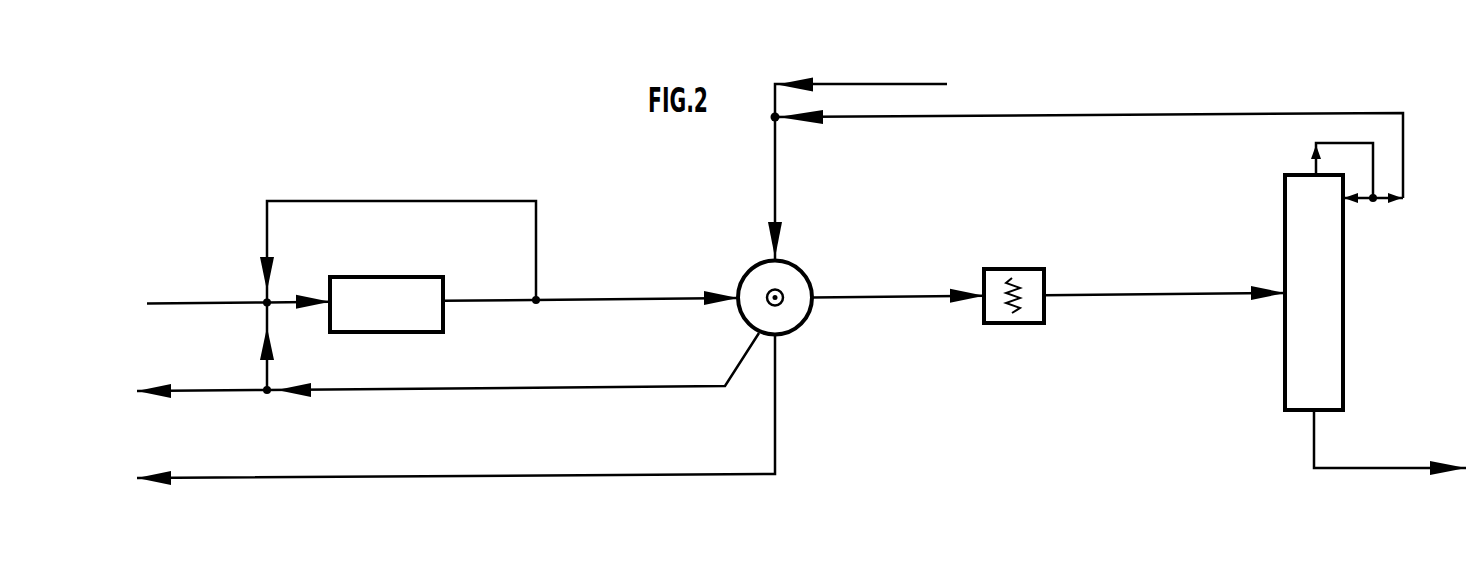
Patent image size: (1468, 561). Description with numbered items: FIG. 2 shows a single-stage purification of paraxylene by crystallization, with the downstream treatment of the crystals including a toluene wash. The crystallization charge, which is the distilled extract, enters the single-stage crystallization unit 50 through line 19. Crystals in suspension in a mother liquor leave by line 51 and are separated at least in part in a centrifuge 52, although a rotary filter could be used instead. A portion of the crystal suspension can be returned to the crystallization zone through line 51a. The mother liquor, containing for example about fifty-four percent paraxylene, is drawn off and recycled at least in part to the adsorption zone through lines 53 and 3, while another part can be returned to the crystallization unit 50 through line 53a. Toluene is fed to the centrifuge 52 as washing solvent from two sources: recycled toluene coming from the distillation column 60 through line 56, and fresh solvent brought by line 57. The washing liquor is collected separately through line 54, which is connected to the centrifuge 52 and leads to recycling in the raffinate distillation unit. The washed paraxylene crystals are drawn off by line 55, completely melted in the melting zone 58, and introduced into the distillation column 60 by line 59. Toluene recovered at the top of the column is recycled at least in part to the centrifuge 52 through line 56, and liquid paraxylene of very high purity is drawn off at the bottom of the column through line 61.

The line 3 is at (238, 392).
The line 19 is at (176, 302).
The crystallization unit 50 is at (386, 304).
The line 51 is at (560, 300).
The line 51a is at (426, 201).
The centrifuge 52 is at (753, 268).
The line 53 is at (481, 388).
The line 53a is at (262, 335).
The line 54 is at (572, 474).
The line 55 is at (880, 297).
The line 56 is at (1183, 115).
The line 57 is at (947, 84).
The melting zone 58 is at (1043, 268).
The line 59 is at (1142, 294).
The distillation column 60 is at (1344, 276).
The line 61 is at (1357, 468).